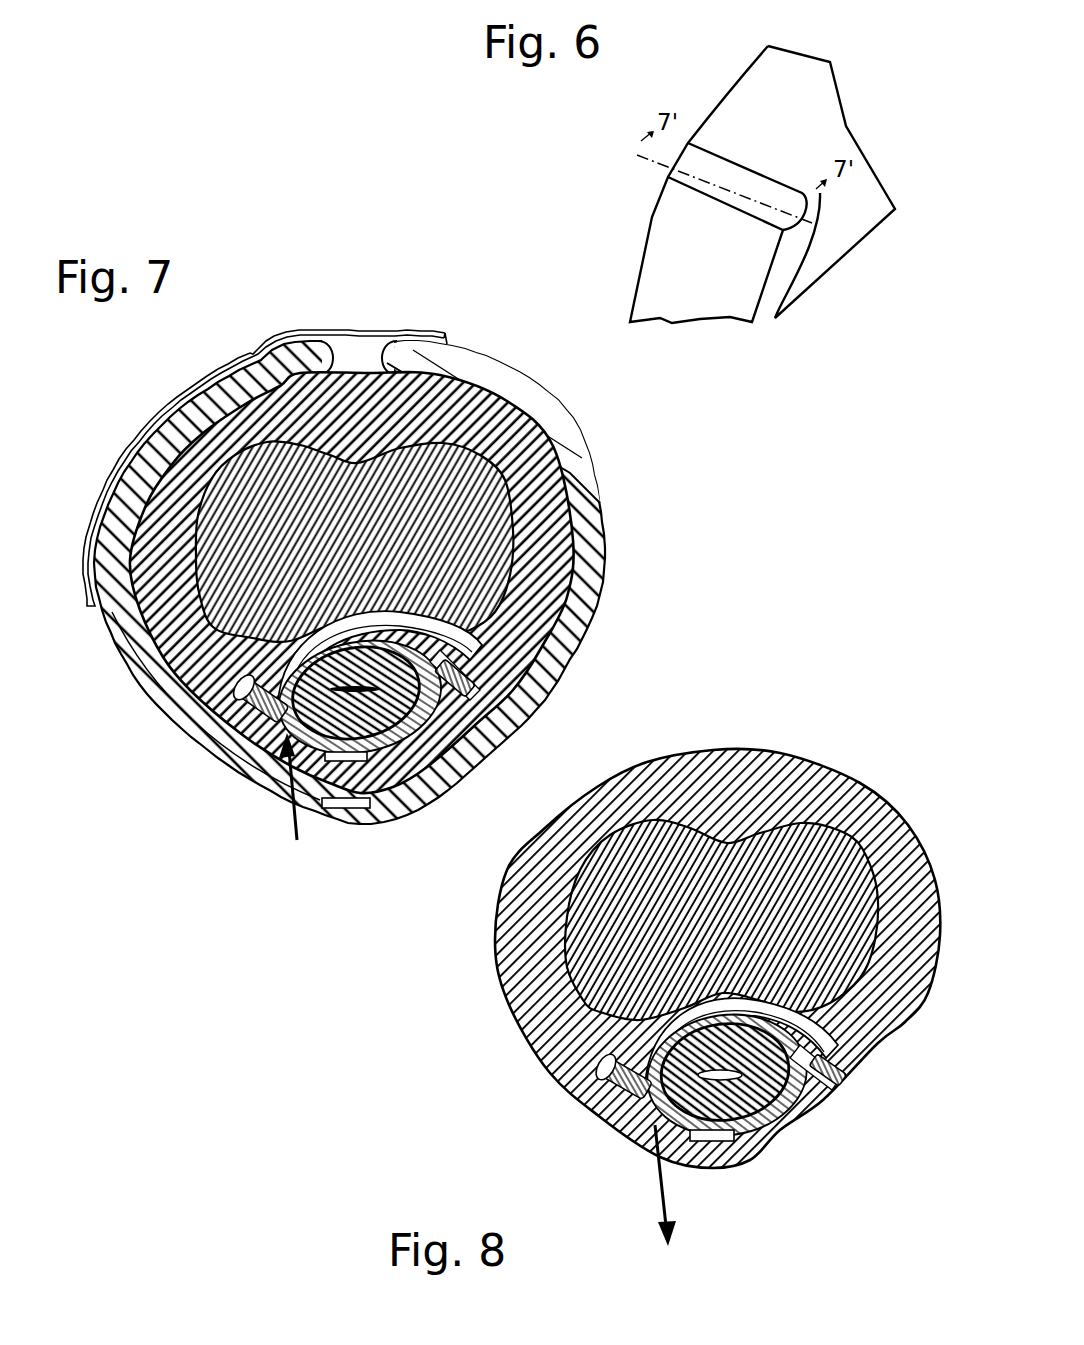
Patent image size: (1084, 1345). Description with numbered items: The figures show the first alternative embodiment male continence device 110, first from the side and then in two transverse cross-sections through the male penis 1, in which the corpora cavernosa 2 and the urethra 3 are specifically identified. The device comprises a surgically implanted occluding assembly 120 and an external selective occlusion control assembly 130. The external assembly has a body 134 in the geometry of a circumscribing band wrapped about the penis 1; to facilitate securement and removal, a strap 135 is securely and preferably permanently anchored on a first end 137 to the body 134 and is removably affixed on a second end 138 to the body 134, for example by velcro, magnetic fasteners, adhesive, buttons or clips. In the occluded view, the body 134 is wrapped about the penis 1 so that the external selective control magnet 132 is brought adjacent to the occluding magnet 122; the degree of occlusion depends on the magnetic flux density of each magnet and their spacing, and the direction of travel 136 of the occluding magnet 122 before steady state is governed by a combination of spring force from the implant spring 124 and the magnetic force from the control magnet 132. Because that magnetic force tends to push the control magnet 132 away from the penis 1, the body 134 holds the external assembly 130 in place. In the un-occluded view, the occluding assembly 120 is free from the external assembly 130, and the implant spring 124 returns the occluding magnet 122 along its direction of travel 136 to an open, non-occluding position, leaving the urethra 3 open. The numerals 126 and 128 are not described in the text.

In FIG. 6, the male penis 1 is at (650, 213).
In FIG. 7, the male penis 1 is at (340, 366).
In FIG. 8, the male penis 1 is at (874, 782).
In FIG. 7, the corpora cavernosa 2 is at (473, 463).
In FIG. 8, the corpora cavernosa 2 is at (587, 985).
In FIG. 7, the urethra 3 is at (483, 760).
In FIG. 8, the urethra 3 is at (790, 1120).
In FIG. 7, the first alternative embodiment male continence device 110 is at (276, 862).
In FIG. 7, the surgically implanted occluding assembly 120 is at (482, 693).
In FIG. 8, the surgically implanted occluding assembly 120 is at (840, 1077).
In FIG. 7, the occluding magnet 122 is at (418, 798).
In FIG. 8, the occluding magnet 122 is at (762, 1162).
In FIG. 7, the implant spring 124 is at (490, 752).
In FIG. 8, the implant spring 124 is at (822, 1100).
In FIG. 7, the flange 126 is at (238, 787).
In FIG. 7, the fixation screw 128 is at (232, 702).
In FIG. 8, the fixation screw 128 is at (600, 1080).
In FIG. 7, the external selective occlusion control assembly 130 is at (592, 462).
In FIG. 7, the external selective control magnet 132 is at (357, 813).
In FIG. 6, the body 134 is at (707, 172).
In FIG. 7, the body 134 is at (487, 366).
In FIG. 7, the strap 135 is at (192, 371).
In FIG. 7, the direction of travel 136 is at (297, 830).
In FIG. 8, the direction of travel 136 is at (660, 1185).
In FIG. 7, the first end 137 is at (390, 333).
In FIG. 7, the second end 138 is at (88, 603).